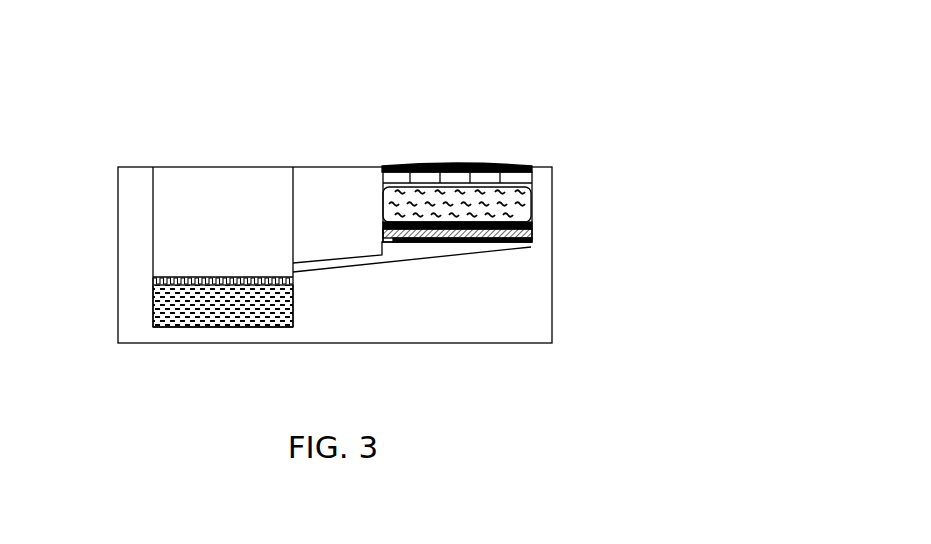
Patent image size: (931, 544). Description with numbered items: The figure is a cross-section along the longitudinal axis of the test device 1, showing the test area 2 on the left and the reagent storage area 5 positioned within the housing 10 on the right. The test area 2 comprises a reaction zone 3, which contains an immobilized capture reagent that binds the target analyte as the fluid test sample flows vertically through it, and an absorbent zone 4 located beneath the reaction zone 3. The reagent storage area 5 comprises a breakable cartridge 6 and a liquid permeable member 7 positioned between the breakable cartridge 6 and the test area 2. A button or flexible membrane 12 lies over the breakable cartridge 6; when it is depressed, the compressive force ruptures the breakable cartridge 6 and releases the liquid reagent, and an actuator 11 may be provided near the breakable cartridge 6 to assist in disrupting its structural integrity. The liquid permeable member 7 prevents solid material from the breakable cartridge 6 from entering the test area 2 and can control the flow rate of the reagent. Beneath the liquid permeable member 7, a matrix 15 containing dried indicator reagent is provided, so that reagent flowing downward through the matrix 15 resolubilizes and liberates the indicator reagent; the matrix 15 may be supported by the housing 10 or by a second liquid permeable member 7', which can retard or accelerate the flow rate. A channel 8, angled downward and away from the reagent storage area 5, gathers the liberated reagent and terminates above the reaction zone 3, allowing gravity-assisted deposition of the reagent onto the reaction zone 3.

The test device 1 is at (108, 138).
The test area 2 is at (229, 197).
The reaction zone 3 is at (153, 280).
The absorbent zone 4 is at (153, 305).
The reagent storage area 5 is at (490, 208).
The breakable cartridge 6 is at (518, 197).
The liquid permeable member 7 is at (488, 224).
The second liquid permeable member 7' is at (354, 217).
The channel 8 is at (410, 259).
The housing 10 is at (335, 255).
The actuator 11 is at (531, 168).
The button or flexible membrane 12 is at (457, 164).
The matrix 15 is at (532, 242).